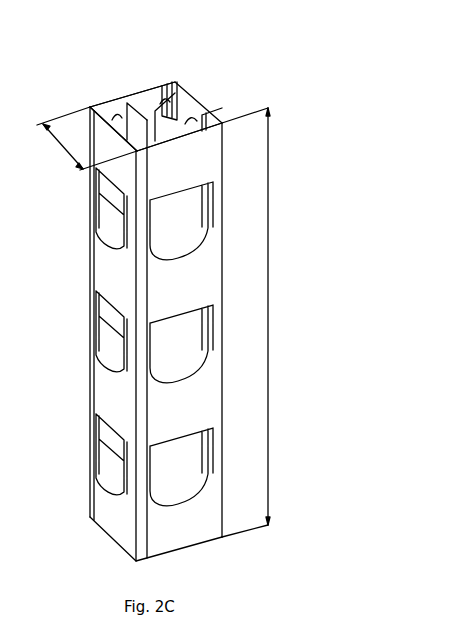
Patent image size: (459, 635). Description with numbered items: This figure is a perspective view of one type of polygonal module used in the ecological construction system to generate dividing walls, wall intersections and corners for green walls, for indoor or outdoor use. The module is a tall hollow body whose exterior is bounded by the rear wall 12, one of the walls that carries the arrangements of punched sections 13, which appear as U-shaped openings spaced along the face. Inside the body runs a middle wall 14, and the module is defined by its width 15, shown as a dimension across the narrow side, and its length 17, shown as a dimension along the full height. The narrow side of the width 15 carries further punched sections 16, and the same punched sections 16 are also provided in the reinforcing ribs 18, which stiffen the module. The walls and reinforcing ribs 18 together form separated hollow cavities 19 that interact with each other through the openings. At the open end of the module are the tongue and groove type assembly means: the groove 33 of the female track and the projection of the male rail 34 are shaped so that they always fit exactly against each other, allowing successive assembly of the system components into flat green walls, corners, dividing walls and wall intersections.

The rear wall 12 is at (217, 162).
The punched sections 13 is at (209, 240).
The middle wall 14 is at (132, 102).
The width 15 is at (87, 138).
The punched sections 16 is at (100, 212).
The length 17 is at (255, 322).
The reinforcing ribs 18 is at (145, 93).
The hollow cavities 19 is at (208, 116).
The groove 33 is at (180, 100).
The projection of the male rail 34 is at (166, 90).